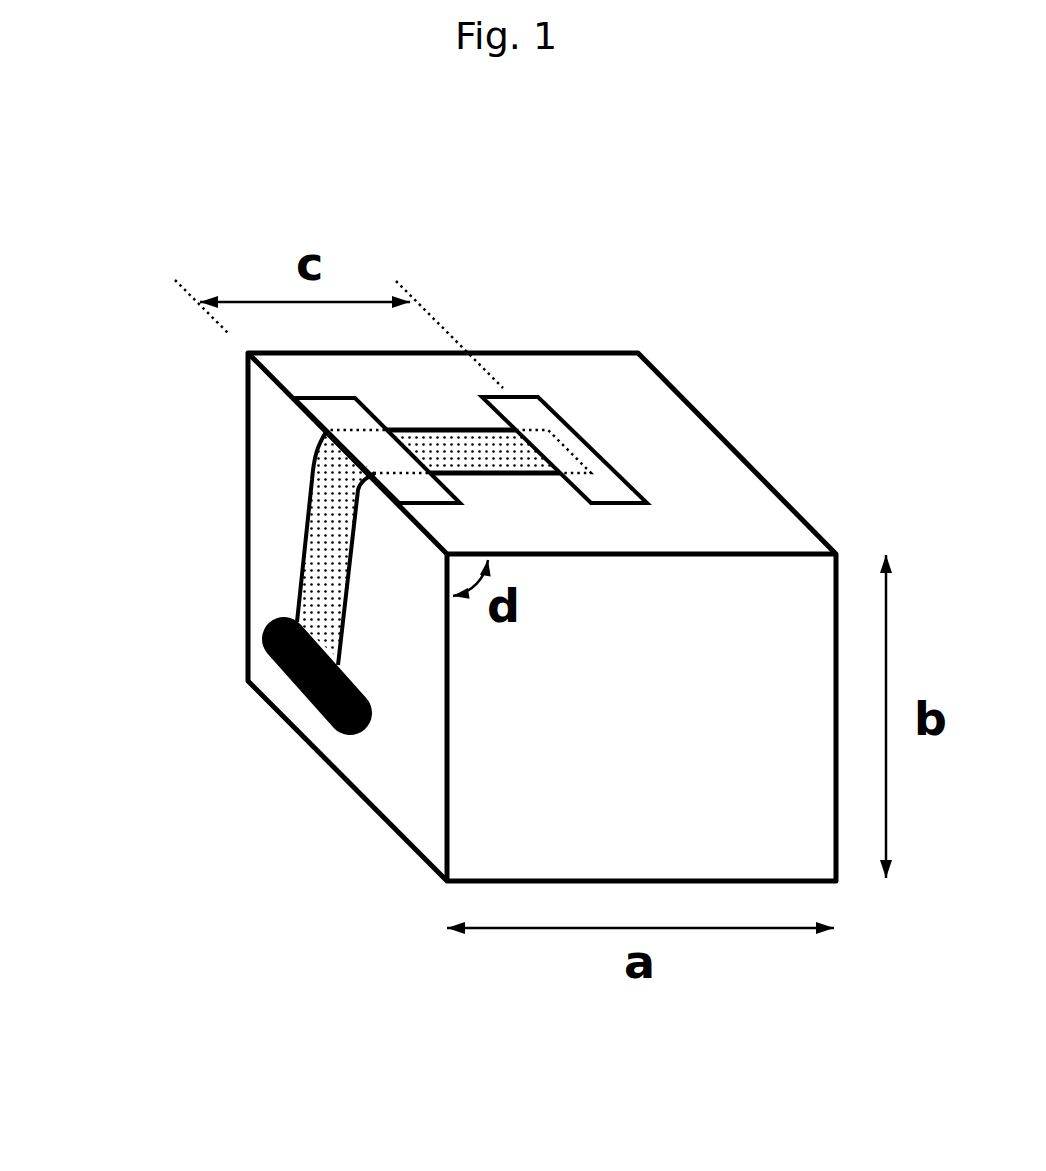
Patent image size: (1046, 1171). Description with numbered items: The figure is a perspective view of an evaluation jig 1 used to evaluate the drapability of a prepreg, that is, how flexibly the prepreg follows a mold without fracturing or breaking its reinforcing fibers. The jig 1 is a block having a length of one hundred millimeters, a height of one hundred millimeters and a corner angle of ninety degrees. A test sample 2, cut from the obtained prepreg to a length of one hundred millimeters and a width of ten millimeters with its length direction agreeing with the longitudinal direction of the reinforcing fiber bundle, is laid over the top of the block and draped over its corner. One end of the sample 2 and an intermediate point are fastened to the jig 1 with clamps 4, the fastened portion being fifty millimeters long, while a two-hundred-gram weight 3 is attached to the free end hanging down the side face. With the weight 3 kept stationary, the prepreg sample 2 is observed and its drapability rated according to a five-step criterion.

The evaluation jig 1 is at (737, 485).
The test sample 2 is at (327, 607).
The weight 3 is at (290, 695).
The clamps 4 is at (417, 415).